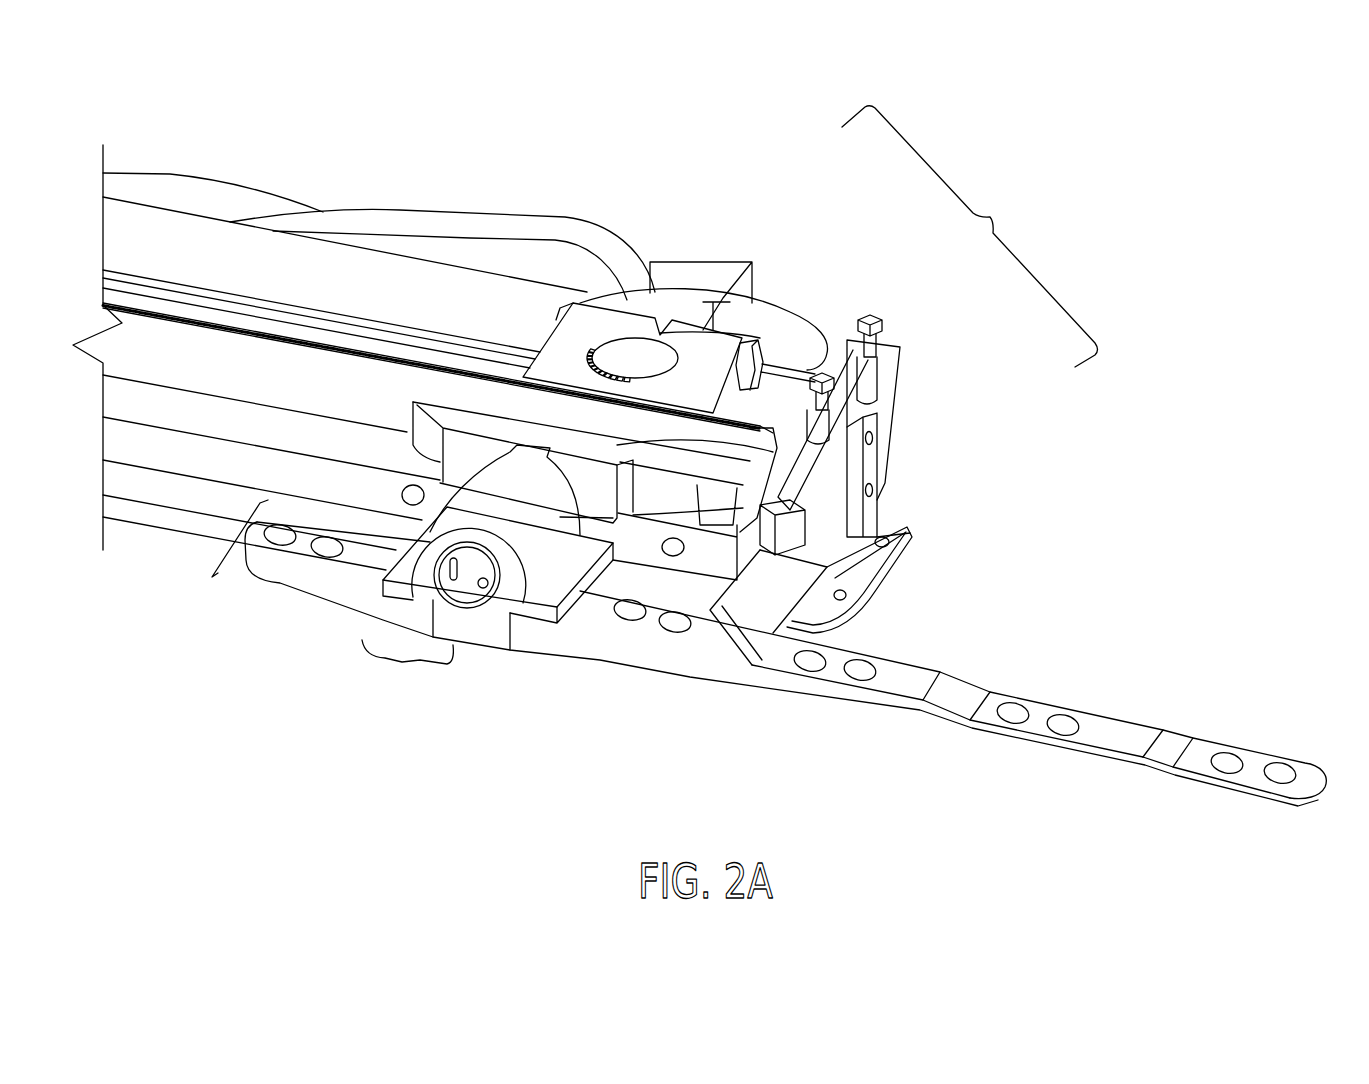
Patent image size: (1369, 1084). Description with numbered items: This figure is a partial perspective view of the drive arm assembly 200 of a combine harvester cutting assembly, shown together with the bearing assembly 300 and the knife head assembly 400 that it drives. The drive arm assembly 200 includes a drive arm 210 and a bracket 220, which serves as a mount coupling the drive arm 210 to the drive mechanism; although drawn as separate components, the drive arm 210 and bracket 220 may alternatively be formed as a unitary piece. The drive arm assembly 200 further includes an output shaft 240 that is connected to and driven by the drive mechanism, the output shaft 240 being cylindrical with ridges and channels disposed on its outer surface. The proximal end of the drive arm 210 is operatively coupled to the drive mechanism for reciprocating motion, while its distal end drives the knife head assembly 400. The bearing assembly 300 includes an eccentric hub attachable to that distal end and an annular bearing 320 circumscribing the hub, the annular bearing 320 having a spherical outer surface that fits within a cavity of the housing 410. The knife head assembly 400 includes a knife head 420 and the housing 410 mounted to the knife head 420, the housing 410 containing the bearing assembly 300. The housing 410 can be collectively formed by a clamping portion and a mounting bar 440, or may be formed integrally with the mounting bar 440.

The drive arm assembly 200 is at (970, 236).
The drive arm 210 is at (785, 462).
The bracket 220 is at (613, 330).
The output shaft 240 is at (657, 353).
The bearing assembly 300 is at (471, 569).
The annular bearing 320 is at (505, 600).
The knife head assembly 400 is at (232, 546).
The housing 410 is at (538, 562).
The knife head 420 is at (1165, 713).
The mounting bar 440 is at (873, 655).